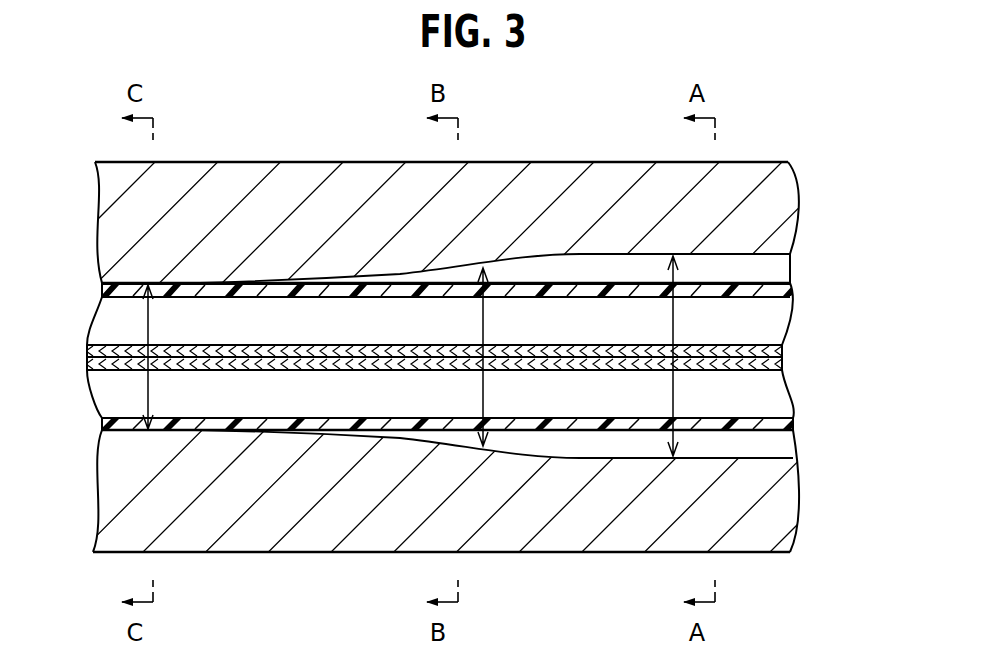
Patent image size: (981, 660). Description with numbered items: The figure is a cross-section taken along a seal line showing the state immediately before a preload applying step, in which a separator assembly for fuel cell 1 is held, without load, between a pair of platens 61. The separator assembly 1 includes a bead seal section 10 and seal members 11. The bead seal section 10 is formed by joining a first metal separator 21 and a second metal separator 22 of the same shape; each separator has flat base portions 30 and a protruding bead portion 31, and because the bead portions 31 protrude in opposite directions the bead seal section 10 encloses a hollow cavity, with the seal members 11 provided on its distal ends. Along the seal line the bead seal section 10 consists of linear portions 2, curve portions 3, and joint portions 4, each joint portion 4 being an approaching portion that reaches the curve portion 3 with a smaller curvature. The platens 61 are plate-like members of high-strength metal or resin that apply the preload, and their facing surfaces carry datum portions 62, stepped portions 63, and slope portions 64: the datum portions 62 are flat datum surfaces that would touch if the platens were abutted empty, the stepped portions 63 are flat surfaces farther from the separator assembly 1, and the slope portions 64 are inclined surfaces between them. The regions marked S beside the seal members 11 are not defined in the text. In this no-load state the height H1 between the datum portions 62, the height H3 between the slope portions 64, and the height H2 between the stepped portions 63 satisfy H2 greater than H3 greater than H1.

The separator assembly for fuel cell 1 is at (72, 316).
The linear portion 2 is at (722, 278).
The curve portion 3 is at (271, 170).
The joint portion 4 is at (547, 278).
The bead seal section 10 is at (814, 440).
The seal member 11 is at (787, 290).
The first metal separator 21 is at (858, 362).
The second metal separator 22 is at (858, 280).
The flat base portion 30 is at (783, 347).
The bead portion 31 is at (780, 316).
The platen 61 is at (358, 180).
The datum portion 62 is at (185, 284).
The stepped portion 63 is at (633, 257).
The slope portion 64 is at (502, 259).
The space S is at (765, 270).
The height dimension between datum portions H1 is at (148, 379).
The height dimension between stepped portions H2 is at (673, 388).
The height dimension between slope portions H3 is at (483, 390).